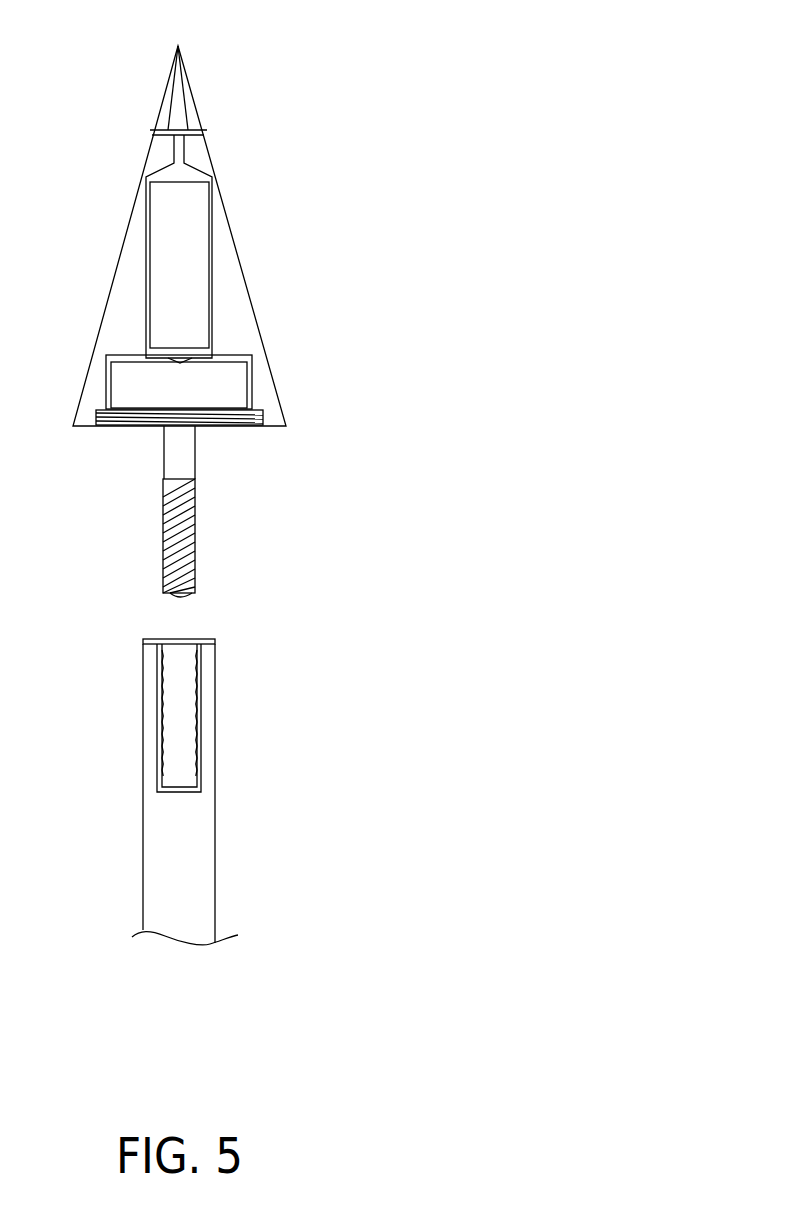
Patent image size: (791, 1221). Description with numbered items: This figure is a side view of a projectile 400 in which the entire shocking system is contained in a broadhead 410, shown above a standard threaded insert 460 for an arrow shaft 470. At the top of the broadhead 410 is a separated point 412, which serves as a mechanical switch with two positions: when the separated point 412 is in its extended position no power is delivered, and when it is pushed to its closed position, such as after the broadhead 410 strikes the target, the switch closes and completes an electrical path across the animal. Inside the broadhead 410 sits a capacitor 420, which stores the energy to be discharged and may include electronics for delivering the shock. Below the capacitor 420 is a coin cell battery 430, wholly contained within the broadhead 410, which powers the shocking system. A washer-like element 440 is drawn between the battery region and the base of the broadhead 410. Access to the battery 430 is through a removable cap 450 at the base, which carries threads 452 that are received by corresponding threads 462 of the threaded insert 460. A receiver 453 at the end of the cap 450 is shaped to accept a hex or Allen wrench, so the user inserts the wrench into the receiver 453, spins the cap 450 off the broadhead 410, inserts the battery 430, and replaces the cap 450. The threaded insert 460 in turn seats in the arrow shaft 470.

The projectile 400 is at (442, 44).
The broadhead 410 is at (237, 282).
The separated point 412 is at (193, 103).
The capacitor 420 is at (203, 235).
The coin cell battery 430 is at (238, 382).
The washer 440 is at (248, 427).
The removable cap 450 is at (164, 460).
The threads 452 is at (163, 522).
The receiver 453 is at (178, 595).
The threaded insert 460 is at (208, 638).
The threads 462 is at (183, 707).
The arrow shaft 470 is at (185, 848).